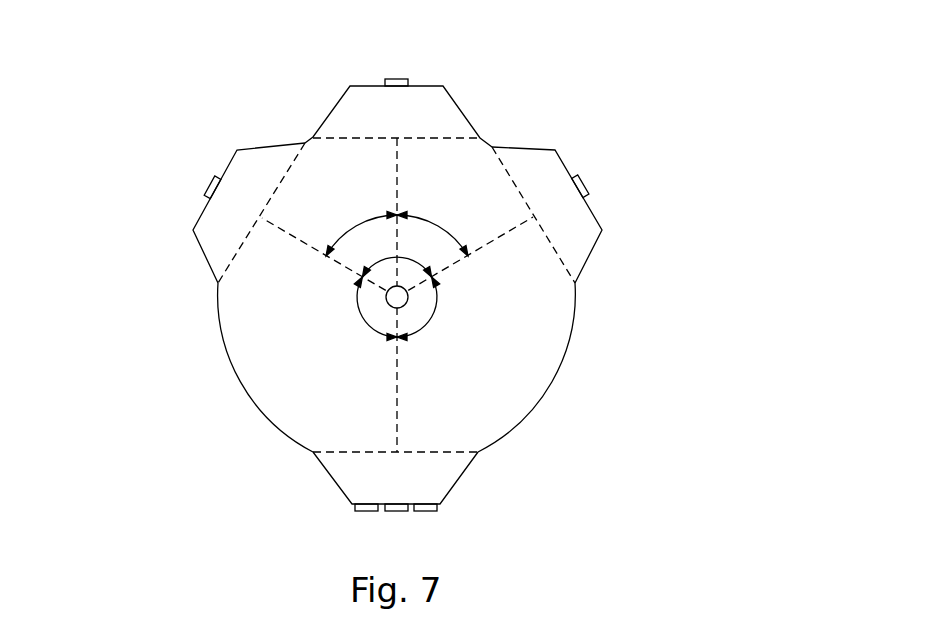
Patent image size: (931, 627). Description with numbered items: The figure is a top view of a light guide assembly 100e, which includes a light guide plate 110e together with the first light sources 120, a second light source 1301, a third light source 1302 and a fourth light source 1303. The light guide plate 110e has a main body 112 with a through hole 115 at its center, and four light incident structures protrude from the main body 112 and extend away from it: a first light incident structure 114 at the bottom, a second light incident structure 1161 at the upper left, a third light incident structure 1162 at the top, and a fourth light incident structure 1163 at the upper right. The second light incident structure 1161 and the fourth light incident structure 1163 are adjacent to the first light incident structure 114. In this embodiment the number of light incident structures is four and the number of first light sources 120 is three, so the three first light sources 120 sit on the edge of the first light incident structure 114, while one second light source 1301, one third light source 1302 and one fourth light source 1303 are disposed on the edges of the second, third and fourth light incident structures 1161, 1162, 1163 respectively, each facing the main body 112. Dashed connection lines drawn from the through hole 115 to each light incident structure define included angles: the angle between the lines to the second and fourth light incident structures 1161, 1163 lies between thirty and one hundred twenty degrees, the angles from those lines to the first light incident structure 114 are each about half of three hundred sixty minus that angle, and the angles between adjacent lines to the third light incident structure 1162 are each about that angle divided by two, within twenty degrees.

The light guide assembly 100e is at (188, 66).
The light guide plate 110e is at (752, 370).
The main body 112 is at (558, 335).
The first light incident structure 114 is at (440, 478).
The through hole 115 is at (376, 297).
The second light incident structure 1161 is at (242, 167).
The third light incident structure 1162 is at (442, 113).
The fourth light incident structure 1163 is at (580, 227).
The first light sources 120 is at (425, 509).
The second light source 1301 is at (203, 183).
The third light source 1302 is at (400, 80).
The fourth light source 1303 is at (583, 181).